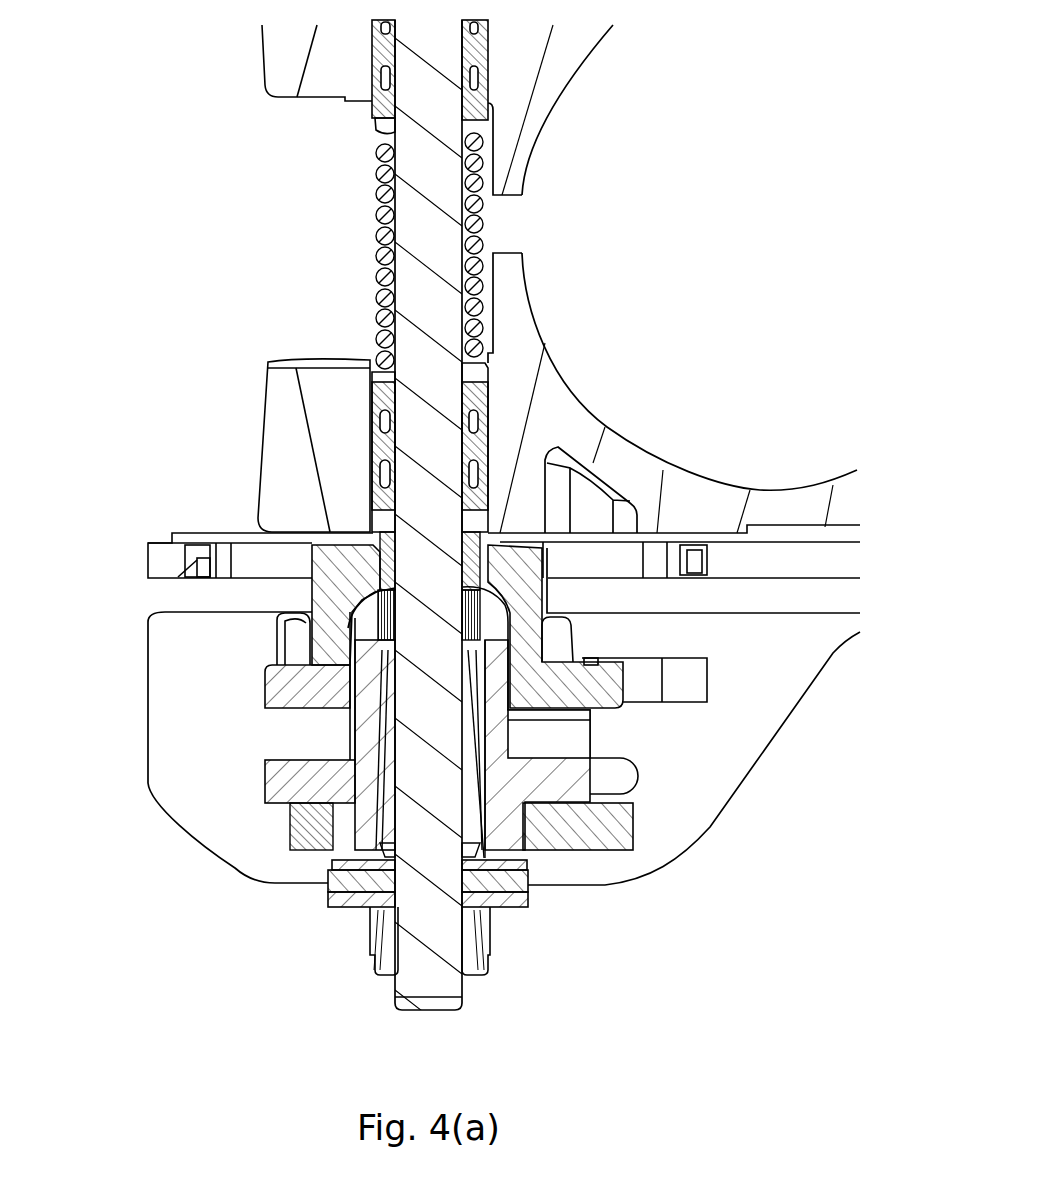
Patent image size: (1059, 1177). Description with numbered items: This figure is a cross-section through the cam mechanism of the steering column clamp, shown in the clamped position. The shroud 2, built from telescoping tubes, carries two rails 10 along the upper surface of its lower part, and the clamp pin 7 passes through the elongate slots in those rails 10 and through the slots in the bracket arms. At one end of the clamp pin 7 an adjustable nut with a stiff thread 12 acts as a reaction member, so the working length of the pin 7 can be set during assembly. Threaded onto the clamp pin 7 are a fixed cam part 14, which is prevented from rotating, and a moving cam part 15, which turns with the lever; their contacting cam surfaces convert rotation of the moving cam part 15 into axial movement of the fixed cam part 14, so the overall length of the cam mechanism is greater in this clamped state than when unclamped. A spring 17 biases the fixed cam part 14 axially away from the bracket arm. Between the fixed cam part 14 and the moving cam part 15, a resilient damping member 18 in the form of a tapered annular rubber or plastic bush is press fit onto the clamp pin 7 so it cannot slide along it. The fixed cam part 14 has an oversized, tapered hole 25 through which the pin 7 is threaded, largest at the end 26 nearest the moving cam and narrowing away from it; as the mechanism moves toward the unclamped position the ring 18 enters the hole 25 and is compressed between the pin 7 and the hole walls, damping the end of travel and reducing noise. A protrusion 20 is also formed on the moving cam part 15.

The shroud 2 is at (665, 468).
The clamp pin 7 is at (423, 770).
The rail 10 is at (307, 100).
The adjustable nut with a stiff thread 12 is at (382, 937).
The fixed cam part 14 is at (360, 690).
The moving cam part 15 is at (303, 790).
The spring 17 is at (382, 235).
The resilient damping member 18 is at (385, 625).
The protrusion 20 is at (340, 760).
The hole 25 is at (312, 572).
The end 26 is at (163, 611).